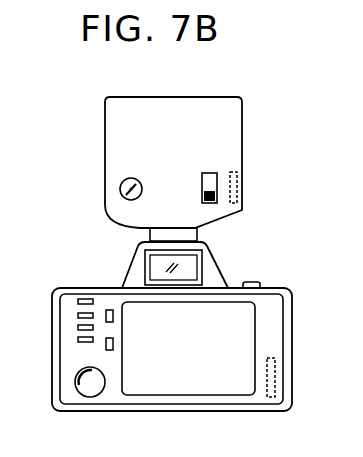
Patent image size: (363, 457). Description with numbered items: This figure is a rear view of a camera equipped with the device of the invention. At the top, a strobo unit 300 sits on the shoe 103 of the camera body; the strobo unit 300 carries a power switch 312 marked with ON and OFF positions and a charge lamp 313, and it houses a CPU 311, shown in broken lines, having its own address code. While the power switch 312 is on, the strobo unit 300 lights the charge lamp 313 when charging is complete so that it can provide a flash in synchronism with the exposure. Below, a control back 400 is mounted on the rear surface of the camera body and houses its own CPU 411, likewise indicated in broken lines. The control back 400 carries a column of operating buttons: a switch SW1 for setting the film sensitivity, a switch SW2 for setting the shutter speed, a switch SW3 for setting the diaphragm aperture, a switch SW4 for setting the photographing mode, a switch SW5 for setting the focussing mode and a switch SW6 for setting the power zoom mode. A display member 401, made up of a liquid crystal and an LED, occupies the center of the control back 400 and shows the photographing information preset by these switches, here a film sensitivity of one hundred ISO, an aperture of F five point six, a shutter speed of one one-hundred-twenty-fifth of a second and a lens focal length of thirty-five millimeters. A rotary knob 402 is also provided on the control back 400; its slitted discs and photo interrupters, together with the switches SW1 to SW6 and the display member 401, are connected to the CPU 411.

The strobo unit 300 is at (229, 99).
The charge lamp 313 is at (131, 179).
The power switch 312 is at (205, 175).
The CPU 311 is at (234, 174).
The shoe 103 is at (198, 237).
The control back 400 is at (265, 303).
The display member 401 is at (180, 396).
The rotary knob 402 is at (90, 397).
The CPU 411 is at (268, 394).
The switch for setting a film sensitivity SW1 is at (81, 297).
The switch for setting a shutter speed SW2 is at (78, 314).
The switch for setting a diaphragm aperture SW3 is at (78, 327).
The switch for setting a photographing mode SW4 is at (78, 339).
The switch for setting a focussing mode SW5 is at (108, 310).
The switch for setting a power zoom mode SW6 is at (107, 345).